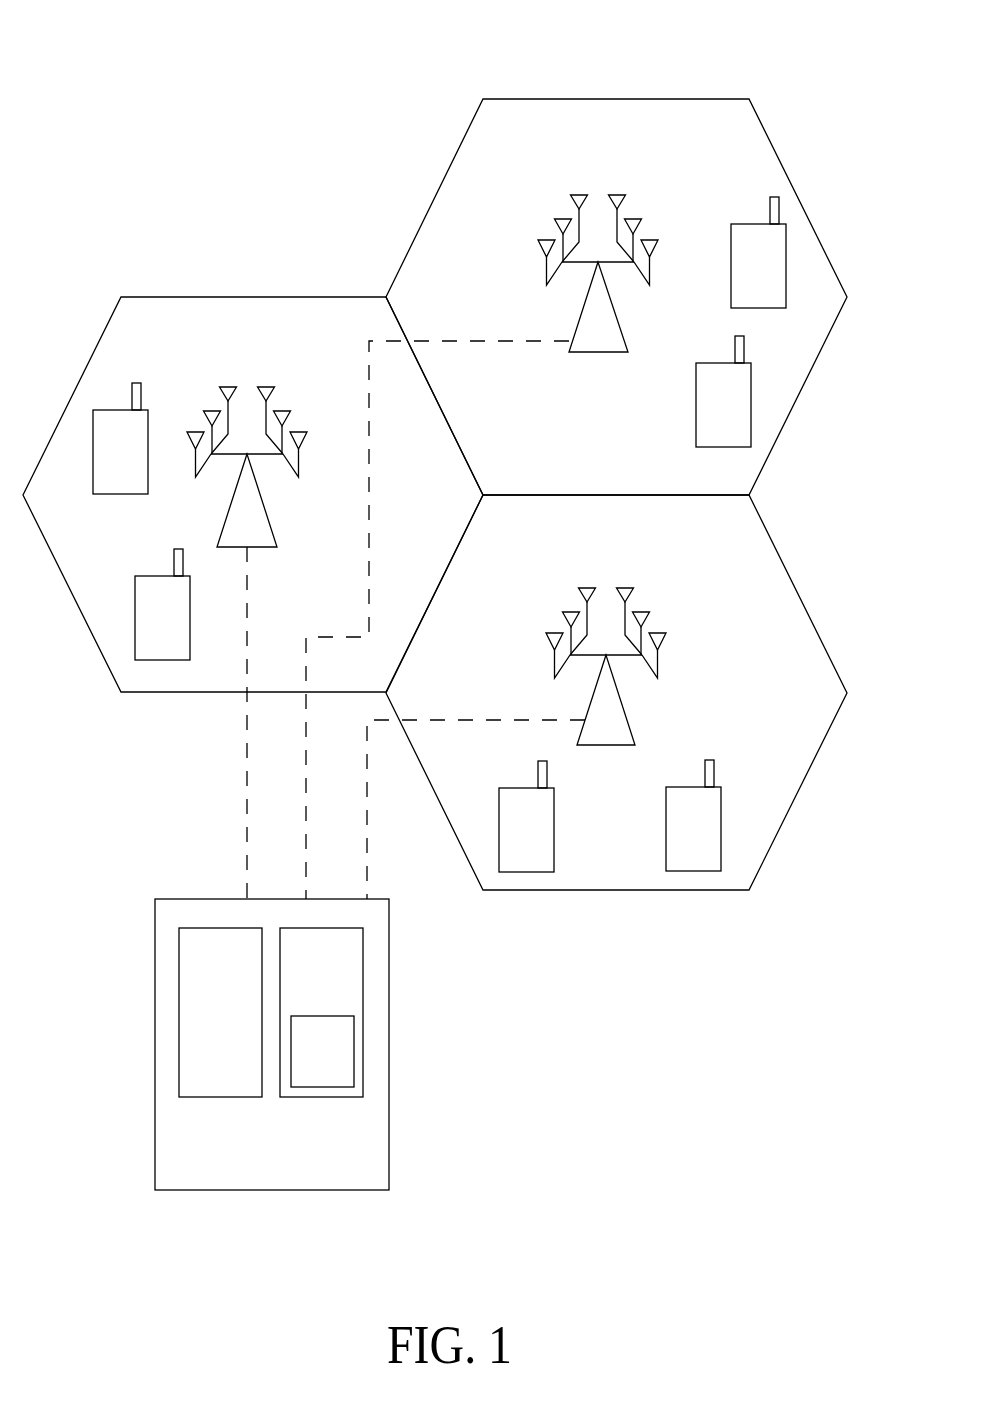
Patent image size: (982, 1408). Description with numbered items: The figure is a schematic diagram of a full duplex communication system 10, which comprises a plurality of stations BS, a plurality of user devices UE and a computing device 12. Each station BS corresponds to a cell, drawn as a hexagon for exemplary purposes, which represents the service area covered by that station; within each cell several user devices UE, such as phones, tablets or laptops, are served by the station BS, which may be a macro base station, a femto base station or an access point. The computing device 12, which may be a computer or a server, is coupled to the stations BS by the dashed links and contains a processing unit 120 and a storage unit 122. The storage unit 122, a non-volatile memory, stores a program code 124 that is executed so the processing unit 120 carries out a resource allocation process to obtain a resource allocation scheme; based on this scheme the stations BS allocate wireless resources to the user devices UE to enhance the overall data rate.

The full duplex communication system 10 is at (246, 98).
The computing device 12 is at (389, 1055).
The processing unit 120 is at (243, 1031).
The storage unit 122 is at (345, 983).
The program code 124 is at (345, 1068).